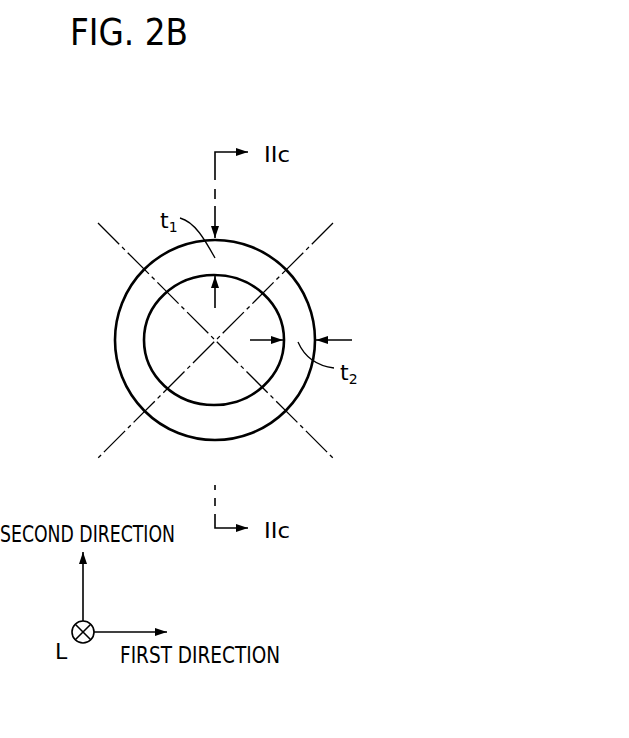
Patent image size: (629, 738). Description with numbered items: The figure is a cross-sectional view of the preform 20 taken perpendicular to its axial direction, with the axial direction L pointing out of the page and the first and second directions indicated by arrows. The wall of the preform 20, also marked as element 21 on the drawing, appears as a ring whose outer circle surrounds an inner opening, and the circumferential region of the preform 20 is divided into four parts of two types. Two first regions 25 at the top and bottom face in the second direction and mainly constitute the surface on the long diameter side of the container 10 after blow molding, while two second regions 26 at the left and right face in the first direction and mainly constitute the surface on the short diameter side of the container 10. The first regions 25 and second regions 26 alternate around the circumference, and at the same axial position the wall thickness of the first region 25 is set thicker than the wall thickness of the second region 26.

The container 10 is at (12, 90).
The preform 20 is at (340, 126).
The tube wall 21 is at (214, 340).
The first region 25 is at (262, 250).
The second region 26 is at (114, 337).